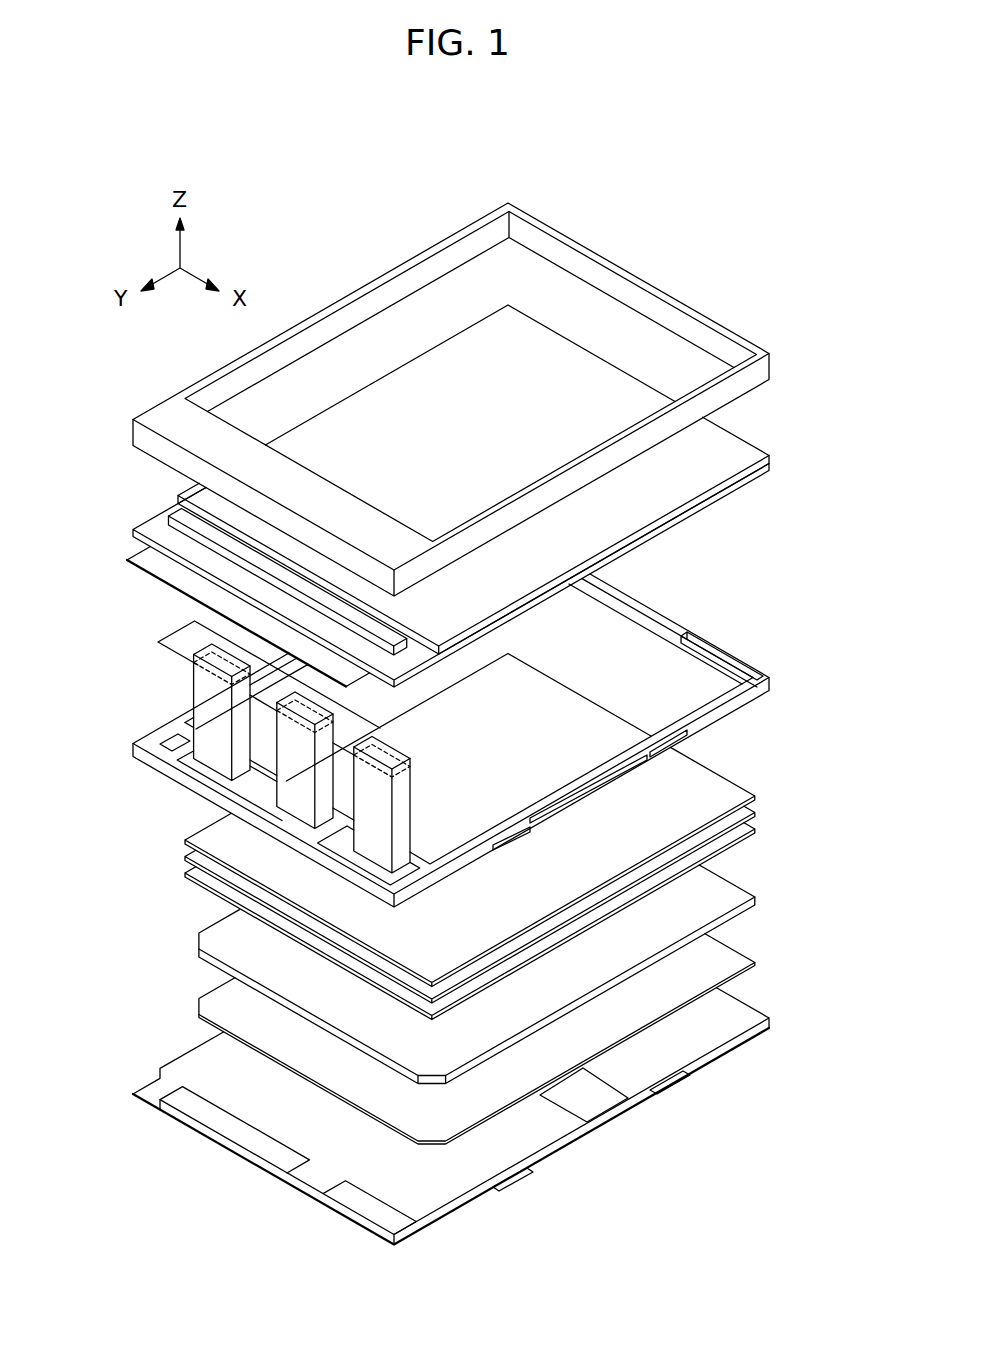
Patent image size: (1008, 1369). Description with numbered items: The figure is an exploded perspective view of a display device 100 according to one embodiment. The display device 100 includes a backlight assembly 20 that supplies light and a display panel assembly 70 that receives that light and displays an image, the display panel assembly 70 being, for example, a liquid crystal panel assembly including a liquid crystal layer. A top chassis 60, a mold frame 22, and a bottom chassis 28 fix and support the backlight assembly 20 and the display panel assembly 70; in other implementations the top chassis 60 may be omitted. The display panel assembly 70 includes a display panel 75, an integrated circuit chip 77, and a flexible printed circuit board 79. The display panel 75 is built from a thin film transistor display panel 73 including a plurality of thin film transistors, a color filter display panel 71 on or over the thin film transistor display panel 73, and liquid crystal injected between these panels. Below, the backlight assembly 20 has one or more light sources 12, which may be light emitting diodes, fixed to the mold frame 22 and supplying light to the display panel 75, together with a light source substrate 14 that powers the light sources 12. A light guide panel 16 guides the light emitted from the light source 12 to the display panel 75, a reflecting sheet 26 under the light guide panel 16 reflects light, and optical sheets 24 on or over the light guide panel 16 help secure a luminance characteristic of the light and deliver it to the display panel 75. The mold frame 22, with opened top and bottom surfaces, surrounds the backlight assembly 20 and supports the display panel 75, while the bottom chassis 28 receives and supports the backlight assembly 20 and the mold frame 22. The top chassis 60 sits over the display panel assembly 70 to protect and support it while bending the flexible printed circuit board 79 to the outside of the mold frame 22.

The display device 100 is at (481, 175).
The top chassis 60 is at (740, 338).
The display panel 75 is at (562, 373).
The display panel assembly 70 is at (112, 515).
The color filter display panel 71 is at (770, 460).
The thin film transistor display panel 73 is at (770, 467).
The integrated circuit chip 77 is at (172, 516).
The flexible printed circuit board 79 is at (144, 566).
The light source substrate 14 is at (158, 645).
The light source 12 is at (192, 681).
The backlight assembly 20 is at (814, 795).
The mold frame 22 is at (775, 683).
The optical sheets 24 is at (762, 783).
The light guide panel 16 is at (738, 895).
The reflecting sheet 26 is at (745, 960).
The bottom chassis 28 is at (745, 1003).